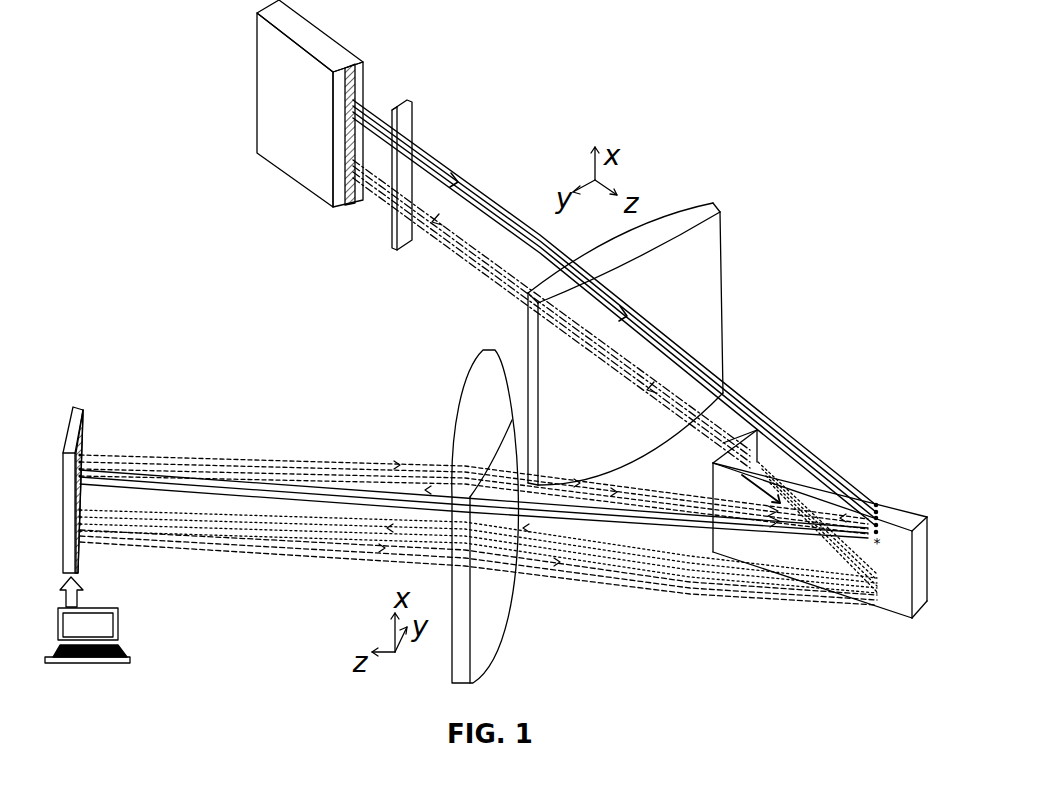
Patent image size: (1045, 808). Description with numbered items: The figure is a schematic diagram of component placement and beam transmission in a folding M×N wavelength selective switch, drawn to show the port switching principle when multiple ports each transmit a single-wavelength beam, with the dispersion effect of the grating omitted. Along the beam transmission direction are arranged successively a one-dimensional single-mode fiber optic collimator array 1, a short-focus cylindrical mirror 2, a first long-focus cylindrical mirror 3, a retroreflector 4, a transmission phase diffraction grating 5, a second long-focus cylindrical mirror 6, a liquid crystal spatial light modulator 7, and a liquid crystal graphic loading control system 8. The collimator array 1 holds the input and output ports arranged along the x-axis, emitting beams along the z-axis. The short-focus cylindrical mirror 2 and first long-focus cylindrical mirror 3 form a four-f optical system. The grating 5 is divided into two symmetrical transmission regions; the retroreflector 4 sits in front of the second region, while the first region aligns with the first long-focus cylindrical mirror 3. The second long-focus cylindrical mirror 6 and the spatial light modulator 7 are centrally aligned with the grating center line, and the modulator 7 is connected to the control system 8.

The one-dimensional single-mode fiber optic collimator array 1 is at (290, 157).
The short-focus cylindrical mirror 2 is at (405, 233).
The first long-focus cylindrical mirror 3 is at (707, 318).
The retroreflector 4 is at (747, 440).
The transmission phase diffraction grating 5 is at (883, 512).
The second long-focus cylindrical mirror 6 is at (488, 623).
The liquid crystal spatial light modulator 7 is at (80, 550).
The liquid crystal graphic loading control system 8 is at (100, 620).